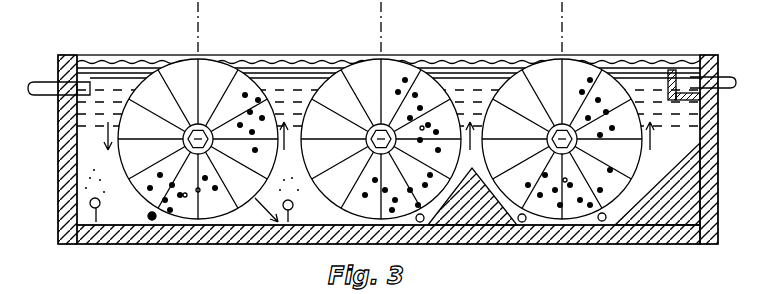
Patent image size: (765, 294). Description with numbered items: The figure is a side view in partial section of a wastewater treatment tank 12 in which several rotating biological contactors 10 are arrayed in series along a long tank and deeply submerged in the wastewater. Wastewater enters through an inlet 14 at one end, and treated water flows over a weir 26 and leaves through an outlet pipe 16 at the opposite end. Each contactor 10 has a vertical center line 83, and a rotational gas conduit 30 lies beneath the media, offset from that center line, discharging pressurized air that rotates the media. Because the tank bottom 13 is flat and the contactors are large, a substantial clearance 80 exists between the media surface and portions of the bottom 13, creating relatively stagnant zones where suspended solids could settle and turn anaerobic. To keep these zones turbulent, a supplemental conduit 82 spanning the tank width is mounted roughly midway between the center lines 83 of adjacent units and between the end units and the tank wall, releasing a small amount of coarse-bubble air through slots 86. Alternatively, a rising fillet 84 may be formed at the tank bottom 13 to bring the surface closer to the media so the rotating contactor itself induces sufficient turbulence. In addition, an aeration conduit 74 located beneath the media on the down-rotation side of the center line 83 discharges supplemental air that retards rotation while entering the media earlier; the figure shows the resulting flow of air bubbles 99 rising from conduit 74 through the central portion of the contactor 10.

The rotating biological contactor 10 is at (184, 78).
The treatment tank 12 is at (705, 114).
The tank bottom 13 is at (74, 231).
The inlet 14 is at (48, 97).
The outlet pipe 16 is at (731, 76).
The weir 26 is at (673, 68).
The rotational gas conduit 30 is at (603, 224).
The aeration conduit 74 is at (152, 222).
The clearance 80 is at (266, 216).
The supplemental conduit 82 is at (98, 210).
The center line 83 is at (198, 18).
The rising fillet 84 is at (493, 212).
The slots 86 is at (88, 203).
The air bubbles 99 is at (268, 72).